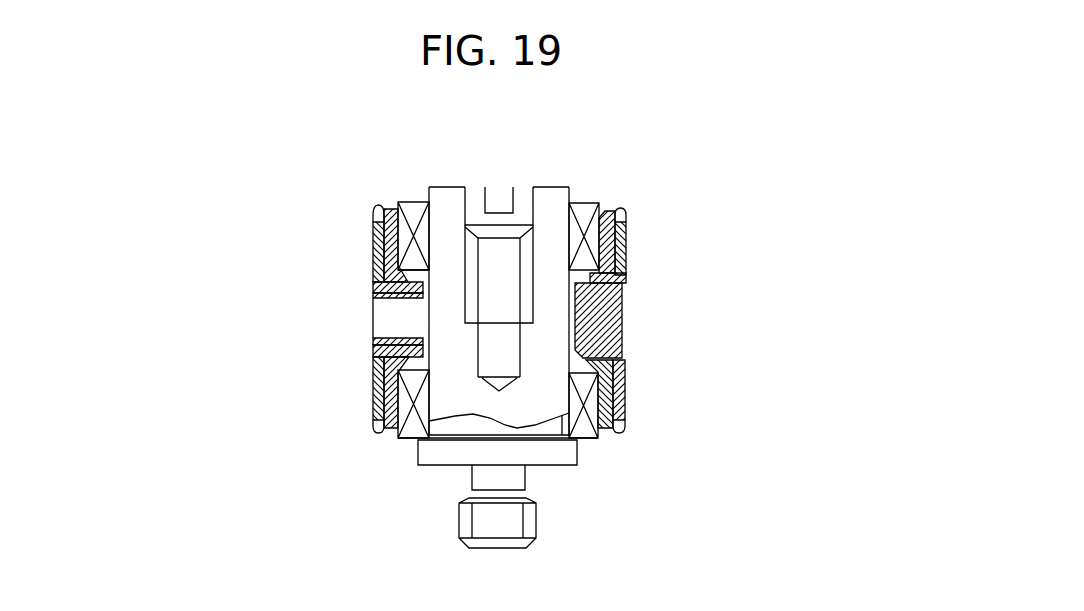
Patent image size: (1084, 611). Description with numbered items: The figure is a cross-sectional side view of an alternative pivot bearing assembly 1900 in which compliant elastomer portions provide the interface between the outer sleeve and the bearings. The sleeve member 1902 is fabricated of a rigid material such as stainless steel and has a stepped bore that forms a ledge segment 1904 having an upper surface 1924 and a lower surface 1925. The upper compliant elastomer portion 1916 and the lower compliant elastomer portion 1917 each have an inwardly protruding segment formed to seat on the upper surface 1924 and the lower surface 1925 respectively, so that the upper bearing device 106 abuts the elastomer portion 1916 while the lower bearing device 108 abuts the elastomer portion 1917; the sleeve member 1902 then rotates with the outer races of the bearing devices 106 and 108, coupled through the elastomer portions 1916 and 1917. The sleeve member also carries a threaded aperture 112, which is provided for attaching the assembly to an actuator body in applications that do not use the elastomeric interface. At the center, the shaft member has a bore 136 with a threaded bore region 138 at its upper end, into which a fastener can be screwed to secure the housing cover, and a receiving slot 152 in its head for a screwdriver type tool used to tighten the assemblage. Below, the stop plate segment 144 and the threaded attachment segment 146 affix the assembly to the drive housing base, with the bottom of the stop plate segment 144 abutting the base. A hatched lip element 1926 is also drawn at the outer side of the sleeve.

The pivot bearing assembly 1900 is at (377, 148).
The receiving slot 152 is at (497, 192).
The upper bearing device 106 is at (592, 208).
The threaded bore region 138 is at (500, 303).
The upper surface 1924 is at (608, 277).
The ledge segment 1904 is at (610, 310).
The upper sealing lip 1926 is at (612, 341).
The lower compliant elastomer portion 1917 is at (622, 377).
The lower surface 1925 is at (612, 392).
The lower bearing device 108 is at (598, 441).
The attachment segment 146 is at (528, 528).
The stop plate segment 144 is at (457, 458).
The shaft member bore 136 is at (488, 366).
The sleeve member 1902 is at (373, 345).
The threaded aperture 112 is at (397, 318).
The upper compliant elastomer portion 1916 is at (375, 268).